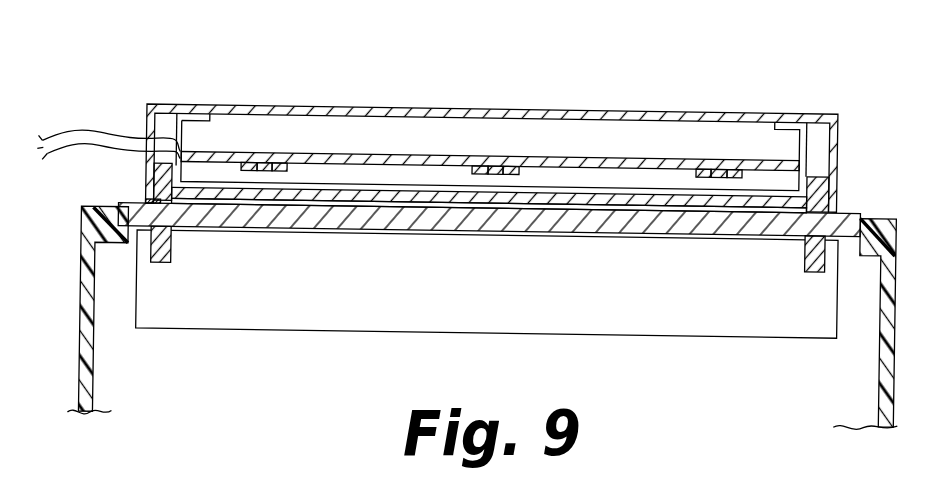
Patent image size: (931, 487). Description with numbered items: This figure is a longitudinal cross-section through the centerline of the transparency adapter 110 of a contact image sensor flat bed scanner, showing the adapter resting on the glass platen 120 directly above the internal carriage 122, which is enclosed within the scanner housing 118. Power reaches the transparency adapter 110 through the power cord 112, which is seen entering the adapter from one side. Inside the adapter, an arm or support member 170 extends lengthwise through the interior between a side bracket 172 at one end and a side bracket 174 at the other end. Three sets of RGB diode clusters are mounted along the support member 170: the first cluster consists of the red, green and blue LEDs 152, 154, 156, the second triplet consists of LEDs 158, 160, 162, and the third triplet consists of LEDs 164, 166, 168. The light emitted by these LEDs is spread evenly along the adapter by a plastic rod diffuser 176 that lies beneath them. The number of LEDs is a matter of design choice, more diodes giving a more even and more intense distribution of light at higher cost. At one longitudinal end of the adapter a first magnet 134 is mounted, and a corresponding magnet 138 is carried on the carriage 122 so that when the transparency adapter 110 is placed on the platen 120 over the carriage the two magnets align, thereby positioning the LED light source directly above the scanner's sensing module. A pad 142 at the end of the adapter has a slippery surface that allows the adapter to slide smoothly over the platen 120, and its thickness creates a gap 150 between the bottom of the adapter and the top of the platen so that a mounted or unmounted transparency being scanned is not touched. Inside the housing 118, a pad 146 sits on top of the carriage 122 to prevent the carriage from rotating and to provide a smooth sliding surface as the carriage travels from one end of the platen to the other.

The transparency adapter 110 is at (420, 85).
The power cord 112 is at (108, 133).
The housing 118 is at (90, 388).
The platen 120 is at (283, 220).
The carriage 122 is at (235, 304).
The first magnet 134 is at (163, 178).
The magnet 138 is at (170, 262).
The pad 142 is at (148, 200).
The pad 146 is at (173, 229).
The gap 150 is at (340, 199).
The LED 152 is at (250, 165).
The LED 154 is at (265, 165).
The LED 156 is at (279, 165).
The LED 158 is at (482, 165).
The LED 160 is at (497, 165).
The LED 162 is at (514, 165).
The LED 164 is at (701, 166).
The LED 166 is at (718, 166).
The LED 168 is at (734, 166).
The support member 170 is at (365, 155).
The side bracket 172 is at (183, 104).
The side bracket 174 is at (790, 117).
The plastic rod diffuser 176 is at (637, 195).